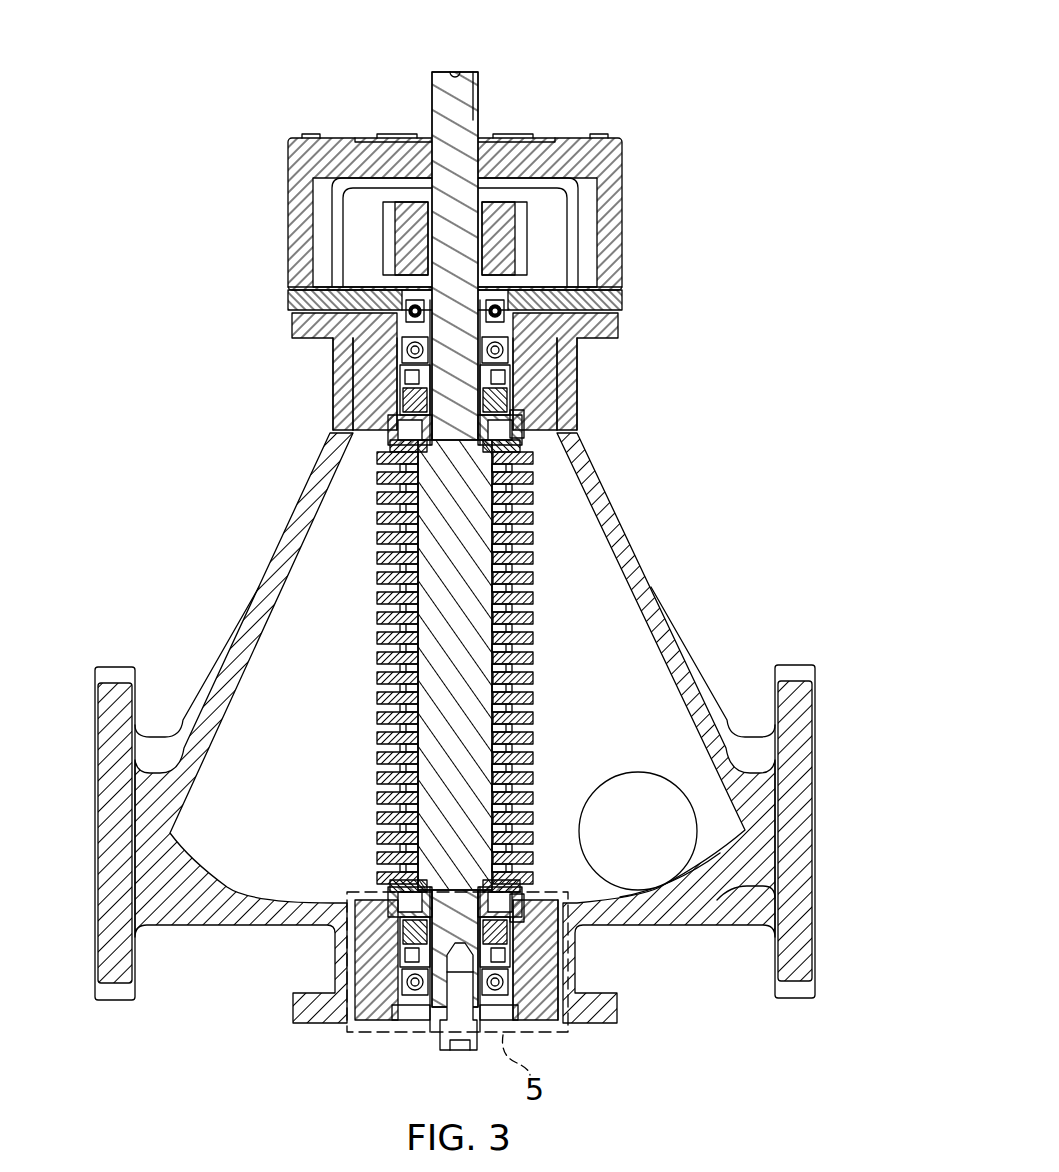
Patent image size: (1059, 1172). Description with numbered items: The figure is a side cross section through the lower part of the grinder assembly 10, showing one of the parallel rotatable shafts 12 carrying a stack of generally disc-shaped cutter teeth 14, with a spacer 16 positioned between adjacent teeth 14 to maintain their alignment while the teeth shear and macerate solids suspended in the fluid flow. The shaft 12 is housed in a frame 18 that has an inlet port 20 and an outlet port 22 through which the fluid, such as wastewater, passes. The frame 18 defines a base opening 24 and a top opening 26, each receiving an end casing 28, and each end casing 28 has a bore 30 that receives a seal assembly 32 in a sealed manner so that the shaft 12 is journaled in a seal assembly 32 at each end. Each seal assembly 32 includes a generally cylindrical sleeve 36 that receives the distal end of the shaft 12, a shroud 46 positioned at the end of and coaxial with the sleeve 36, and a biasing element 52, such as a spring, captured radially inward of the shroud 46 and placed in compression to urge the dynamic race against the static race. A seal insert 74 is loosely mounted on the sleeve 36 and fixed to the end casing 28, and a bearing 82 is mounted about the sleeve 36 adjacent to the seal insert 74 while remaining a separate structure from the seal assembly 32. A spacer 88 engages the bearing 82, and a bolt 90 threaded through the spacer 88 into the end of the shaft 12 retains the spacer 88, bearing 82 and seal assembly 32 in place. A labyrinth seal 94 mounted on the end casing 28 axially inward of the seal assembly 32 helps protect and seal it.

The grinder assembly 10 is at (697, 88).
The rotatable shaft 12 is at (471, 627).
The cutter teeth 14 is at (533, 552).
The spacer 16 is at (523, 524).
The frame 18 is at (593, 477).
The inlet port 20 is at (121, 797).
The outlet port 22 is at (795, 780).
The base opening 24 is at (343, 975).
The top opening 26 is at (567, 400).
The end casing 28 is at (534, 331).
The bore 30 is at (523, 318).
The seal assembly 32 is at (530, 368).
The sleeve 36 is at (433, 405).
The shroud 46 is at (482, 440).
The biasing element 52 is at (403, 412).
The seal insert 74 is at (405, 380).
The bearing 82 is at (406, 350).
The spacer 88 is at (428, 1018).
The bolt 90 is at (461, 1020).
The labyrinth seal 94 is at (513, 444).